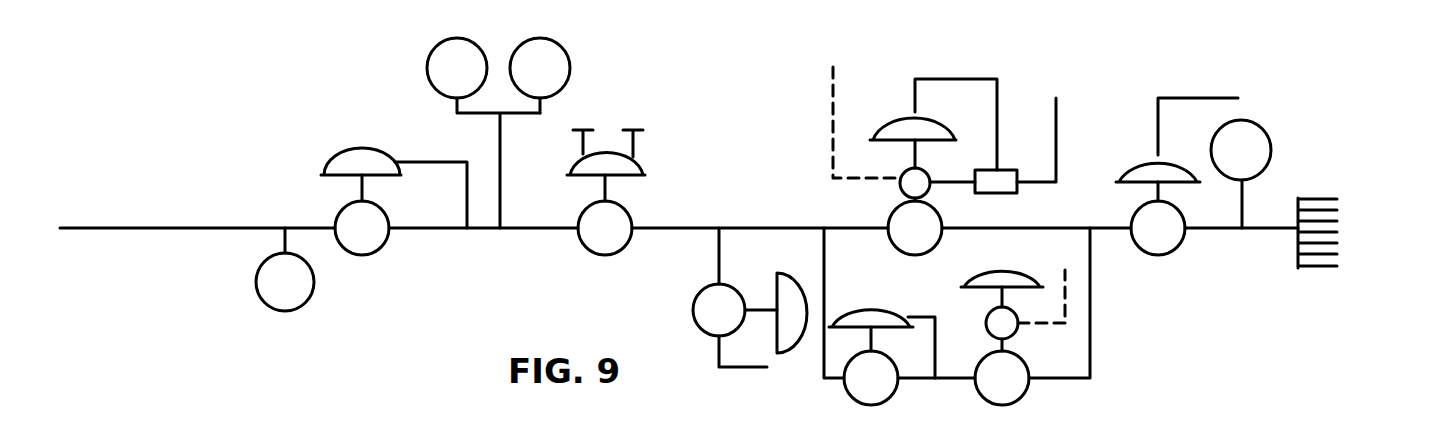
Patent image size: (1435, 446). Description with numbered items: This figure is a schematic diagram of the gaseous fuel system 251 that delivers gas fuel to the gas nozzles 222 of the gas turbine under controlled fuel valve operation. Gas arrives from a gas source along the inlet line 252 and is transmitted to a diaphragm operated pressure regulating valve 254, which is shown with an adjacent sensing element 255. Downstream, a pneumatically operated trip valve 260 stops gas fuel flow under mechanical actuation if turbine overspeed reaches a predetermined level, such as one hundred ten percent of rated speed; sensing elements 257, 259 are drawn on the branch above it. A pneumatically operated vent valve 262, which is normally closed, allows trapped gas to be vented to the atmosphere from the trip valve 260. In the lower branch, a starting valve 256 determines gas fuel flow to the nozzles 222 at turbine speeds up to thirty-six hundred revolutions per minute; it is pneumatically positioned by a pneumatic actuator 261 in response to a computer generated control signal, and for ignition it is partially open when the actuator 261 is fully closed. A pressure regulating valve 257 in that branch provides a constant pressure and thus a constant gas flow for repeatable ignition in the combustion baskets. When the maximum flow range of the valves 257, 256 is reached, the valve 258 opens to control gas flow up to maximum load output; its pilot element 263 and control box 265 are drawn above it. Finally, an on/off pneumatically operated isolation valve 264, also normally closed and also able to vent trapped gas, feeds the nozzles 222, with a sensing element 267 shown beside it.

The fuel system 251 is at (496, 340).
The inlet line 252 is at (218, 225).
The diaphragm operated pressure regulating valve 254 is at (378, 247).
The sensor 63/9G1 255 is at (311, 288).
The starting valve 256 is at (987, 400).
The pressure regulating valve 257 is at (433, 53).
The valve 258 is at (907, 255).
The sensor 63/9GL 259 is at (563, 53).
The pneumatically operated trip valve 260 is at (632, 213).
The pneumatic actuator 261 is at (1017, 335).
The pneumatically operated vent valve 262 is at (695, 327).
The pilot valve 263 is at (905, 168).
The on/off pneumatically operated isolation valve 264 is at (1143, 253).
The control box 265 is at (1015, 193).
The sensor 63/9DN 267 is at (1268, 140).
The gas nozzles 222 is at (1337, 218).